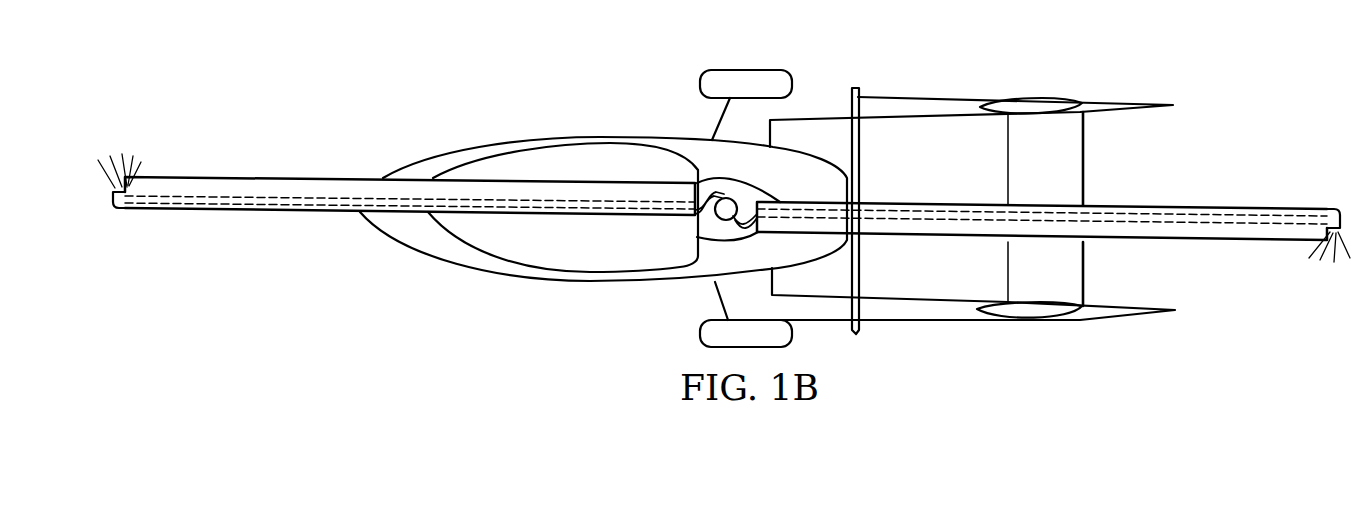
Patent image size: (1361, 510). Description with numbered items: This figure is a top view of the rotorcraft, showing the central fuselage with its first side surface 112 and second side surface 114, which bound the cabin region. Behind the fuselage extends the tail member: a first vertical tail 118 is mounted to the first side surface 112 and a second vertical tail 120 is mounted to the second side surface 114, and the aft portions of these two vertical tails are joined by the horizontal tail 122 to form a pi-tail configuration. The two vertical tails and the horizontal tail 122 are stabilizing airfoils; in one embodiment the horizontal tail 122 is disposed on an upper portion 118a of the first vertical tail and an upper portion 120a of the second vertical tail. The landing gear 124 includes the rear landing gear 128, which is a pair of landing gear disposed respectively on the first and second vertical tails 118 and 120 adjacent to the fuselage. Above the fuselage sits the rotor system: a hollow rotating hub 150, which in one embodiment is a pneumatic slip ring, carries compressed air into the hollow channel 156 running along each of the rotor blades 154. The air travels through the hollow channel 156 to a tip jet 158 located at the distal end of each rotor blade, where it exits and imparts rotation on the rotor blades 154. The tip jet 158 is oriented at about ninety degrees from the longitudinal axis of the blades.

The first side surface 112 is at (524, 282).
The second side surface 114 is at (523, 142).
The first vertical tail 118 is at (927, 330).
The upper portion of first vertical tail 118a is at (1027, 316).
The second vertical tail 120 is at (927, 92).
The upper portion of second vertical tail 120a is at (1030, 104).
The horizontal tail 122 is at (1084, 153).
The landing gear 124 is at (711, 184).
The rear landing gear 128 is at (700, 84).
The rotating hub 150 is at (721, 196).
The rotor blades 154 is at (724, 197).
The hollow channel 156 is at (583, 215).
The tip jet 158 is at (122, 210).